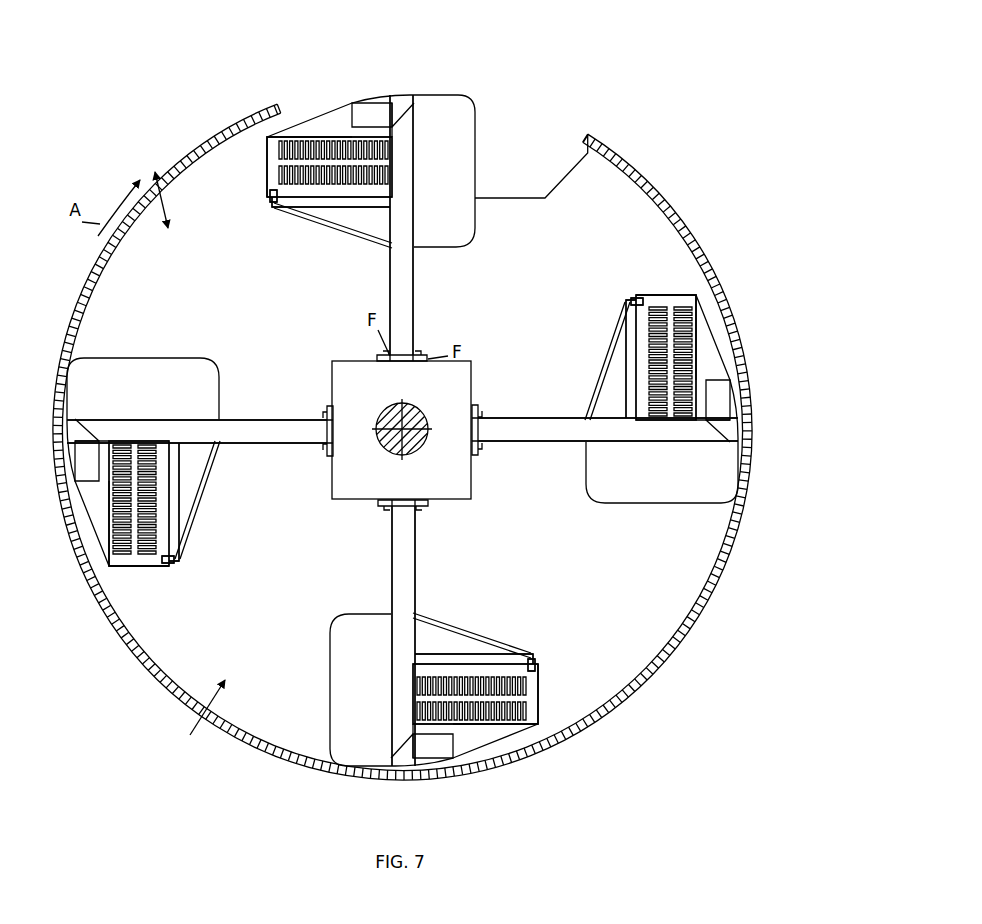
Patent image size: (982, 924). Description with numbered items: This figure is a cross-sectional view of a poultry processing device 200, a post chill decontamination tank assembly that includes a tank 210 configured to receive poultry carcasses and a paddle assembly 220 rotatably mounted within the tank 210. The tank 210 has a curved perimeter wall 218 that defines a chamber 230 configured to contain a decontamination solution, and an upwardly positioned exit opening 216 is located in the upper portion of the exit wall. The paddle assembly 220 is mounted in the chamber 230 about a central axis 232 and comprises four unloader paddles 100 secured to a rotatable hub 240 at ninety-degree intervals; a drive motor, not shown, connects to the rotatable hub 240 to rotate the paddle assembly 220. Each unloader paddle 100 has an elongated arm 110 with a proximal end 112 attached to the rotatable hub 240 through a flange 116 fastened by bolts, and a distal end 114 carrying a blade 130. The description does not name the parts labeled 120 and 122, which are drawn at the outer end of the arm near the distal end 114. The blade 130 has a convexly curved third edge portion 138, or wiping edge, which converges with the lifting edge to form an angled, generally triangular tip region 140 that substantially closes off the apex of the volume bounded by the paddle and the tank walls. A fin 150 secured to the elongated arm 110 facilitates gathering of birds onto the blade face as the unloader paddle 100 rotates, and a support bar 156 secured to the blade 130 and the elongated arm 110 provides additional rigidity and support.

The unloader paddle 100 is at (276, 222).
The elongated arm 110 is at (416, 300).
The proximal end 112 is at (415, 354).
The distal end 114 is at (414, 152).
The flange 116 is at (380, 357).
The deflector flap 120 is at (372, 112).
The flap joint 122 is at (414, 122).
The blade 130 is at (328, 106).
The third edge portion 138 is at (300, 122).
The tip region 140 is at (268, 168).
The fin 150 is at (478, 128).
The support bar 156 is at (325, 226).
The poultry processing device 200 is at (633, 85).
The tank 210 is at (650, 176).
The exit opening 216 is at (563, 180).
The curved perimeter wall 218 is at (695, 237).
The paddle assembly 220 is at (133, 190).
The chamber 230 is at (193, 715).
The central axis 232 is at (420, 440).
The rotatable hub 240 is at (472, 386).